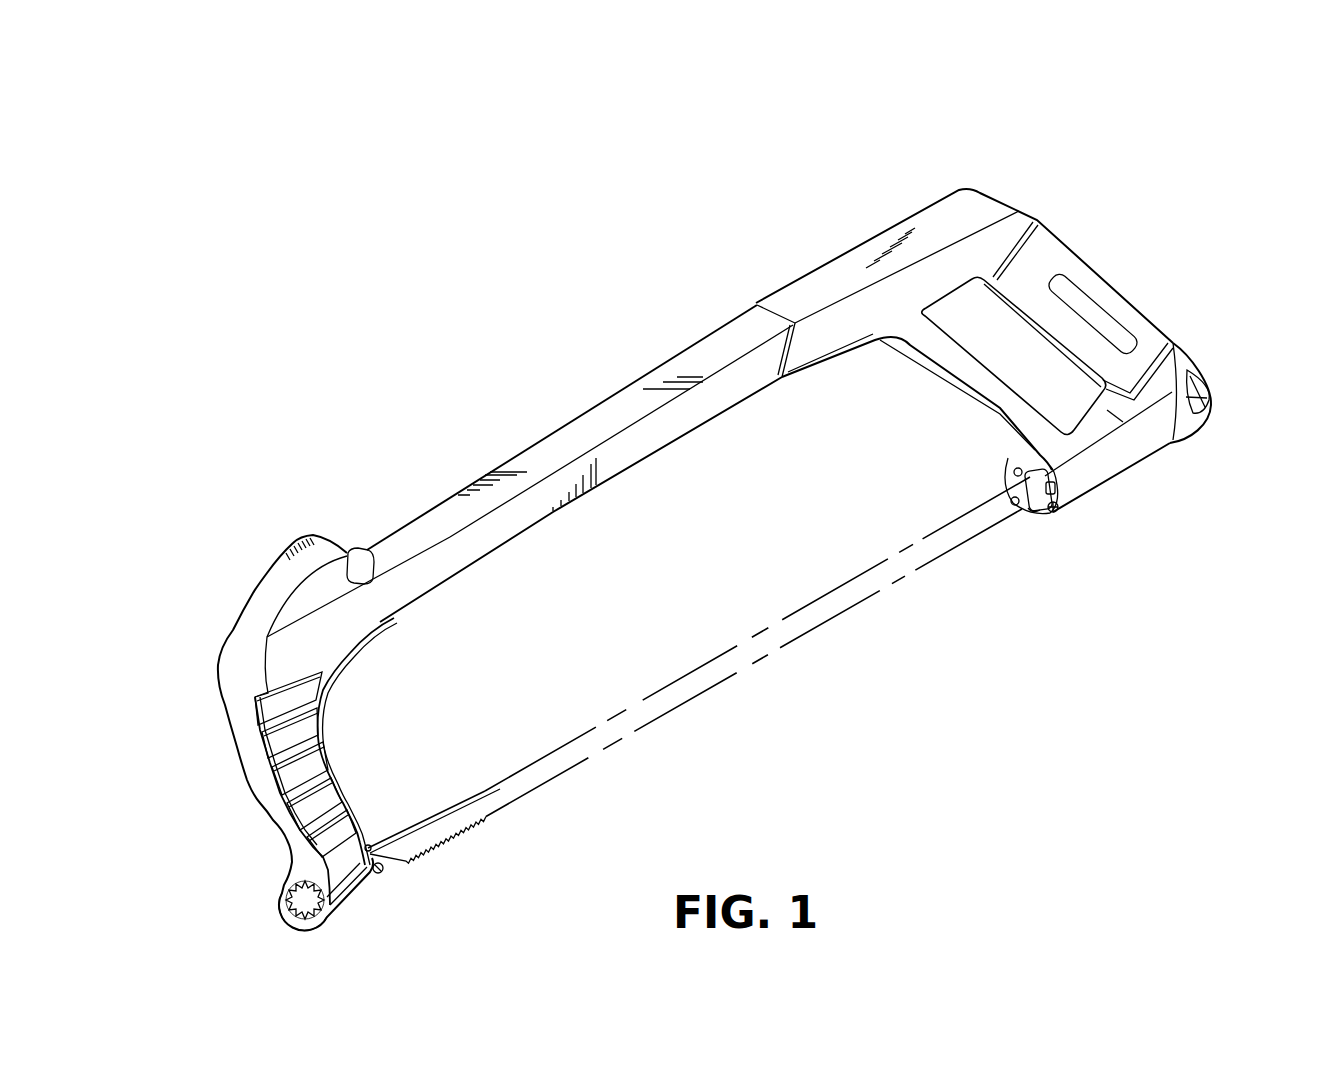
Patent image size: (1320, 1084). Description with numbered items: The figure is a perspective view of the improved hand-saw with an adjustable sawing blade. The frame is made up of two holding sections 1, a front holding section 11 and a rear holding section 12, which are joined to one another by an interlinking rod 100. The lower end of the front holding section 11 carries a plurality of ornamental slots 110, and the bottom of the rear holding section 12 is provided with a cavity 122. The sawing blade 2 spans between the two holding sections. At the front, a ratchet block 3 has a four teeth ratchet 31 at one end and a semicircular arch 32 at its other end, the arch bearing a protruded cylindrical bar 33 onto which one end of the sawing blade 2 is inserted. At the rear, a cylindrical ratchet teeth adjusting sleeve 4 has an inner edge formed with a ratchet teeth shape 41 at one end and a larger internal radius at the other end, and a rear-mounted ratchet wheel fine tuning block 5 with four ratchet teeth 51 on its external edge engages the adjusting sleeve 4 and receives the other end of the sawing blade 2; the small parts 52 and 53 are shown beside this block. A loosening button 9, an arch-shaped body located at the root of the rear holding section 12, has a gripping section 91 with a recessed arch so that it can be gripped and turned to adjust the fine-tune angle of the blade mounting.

The holding sections 1 is at (878, 212).
The interlinking rod 100 is at (563, 442).
The front holding section 11 is at (255, 762).
The ornamental slots 110 is at (290, 778).
The rear holding section 12 is at (1080, 263).
The cavity 122 is at (1055, 480).
The loosening button 9 is at (1193, 427).
The gripping section 91 is at (1208, 390).
The sawing blade 2 is at (566, 746).
The front ratchet block 3 is at (296, 907).
The four teeth ratchet 31 is at (285, 882).
The semicircular arch 32 is at (369, 846).
The protruded cylindrical bar 33 is at (385, 876).
The ratchet teeth adjusting sleeve 4 is at (1052, 492).
The ratchet teeth shape 41 is at (288, 898).
The rear-mounted ratchet wheel fine tuning block 5 is at (1037, 510).
The four ratchet teeth 51 is at (1032, 513).
The upper pin 52 is at (997, 487).
The lower pin 53 is at (1016, 510).